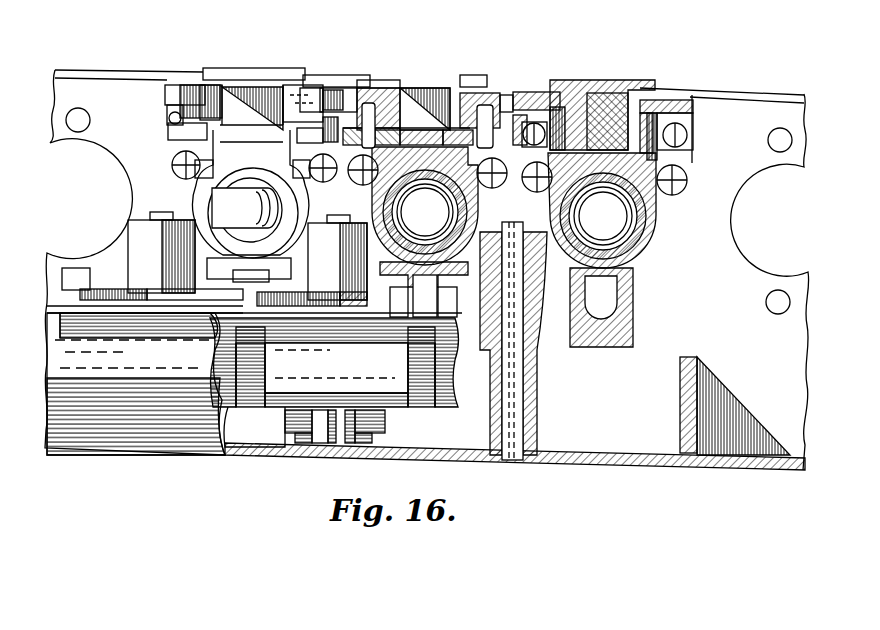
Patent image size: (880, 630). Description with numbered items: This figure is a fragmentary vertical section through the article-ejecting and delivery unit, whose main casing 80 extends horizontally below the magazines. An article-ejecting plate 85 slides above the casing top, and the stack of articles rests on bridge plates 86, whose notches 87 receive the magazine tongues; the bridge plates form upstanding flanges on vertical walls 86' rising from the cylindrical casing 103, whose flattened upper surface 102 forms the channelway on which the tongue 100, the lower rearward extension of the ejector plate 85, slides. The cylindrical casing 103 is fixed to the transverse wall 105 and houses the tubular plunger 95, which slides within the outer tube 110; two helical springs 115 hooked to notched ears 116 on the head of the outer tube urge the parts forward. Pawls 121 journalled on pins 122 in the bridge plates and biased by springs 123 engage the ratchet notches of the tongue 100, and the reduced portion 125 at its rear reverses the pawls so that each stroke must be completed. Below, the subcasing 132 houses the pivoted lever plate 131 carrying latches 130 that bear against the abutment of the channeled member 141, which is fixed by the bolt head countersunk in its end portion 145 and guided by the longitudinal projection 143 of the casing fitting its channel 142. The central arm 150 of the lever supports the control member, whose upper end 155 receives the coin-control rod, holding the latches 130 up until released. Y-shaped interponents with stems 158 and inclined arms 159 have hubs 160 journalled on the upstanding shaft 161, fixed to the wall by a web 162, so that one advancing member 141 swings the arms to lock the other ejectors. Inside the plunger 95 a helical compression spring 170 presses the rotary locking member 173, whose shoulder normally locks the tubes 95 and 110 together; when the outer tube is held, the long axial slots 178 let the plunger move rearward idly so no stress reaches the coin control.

The main casing 80 is at (98, 70).
The article-ejecting plate 85 is at (220, 77).
The bridge plate 86 is at (628, 101).
The vertical wall 86' is at (568, 96).
The notch 87 is at (175, 93).
The tubular plunger 95 is at (283, 212).
The tongue 100 is at (247, 127).
The upper surface 102 is at (568, 133).
The cylindrical casing 103 is at (197, 232).
The transverse wall 105 is at (744, 288).
The outer tube 110 is at (200, 183).
The helical spring 115 is at (178, 152).
The notched ear 116 is at (180, 167).
The pawl 121 is at (168, 134).
The pin 122 is at (192, 117).
The spring 123 is at (170, 117).
The reduced portion 125 is at (430, 133).
The latch 130 is at (257, 330).
The lever plate 131 is at (275, 392).
The casing 132 is at (158, 413).
The channeled member 141 is at (297, 286).
The channel 142 is at (633, 282).
The longitudinal projection 143 is at (633, 322).
The end portion 145 is at (293, 272).
The arm 150 is at (373, 423).
The upper end 155 is at (322, 75).
The stem 158 is at (350, 300).
The inclined arm 159 is at (208, 300).
The hub 160 is at (137, 262).
The upstanding shaft 161 is at (335, 220).
The web 162 is at (690, 410).
The helical compression spring 170 is at (453, 218).
The rotary locking member 173 is at (237, 205).
The axial slot 178 is at (420, 242).